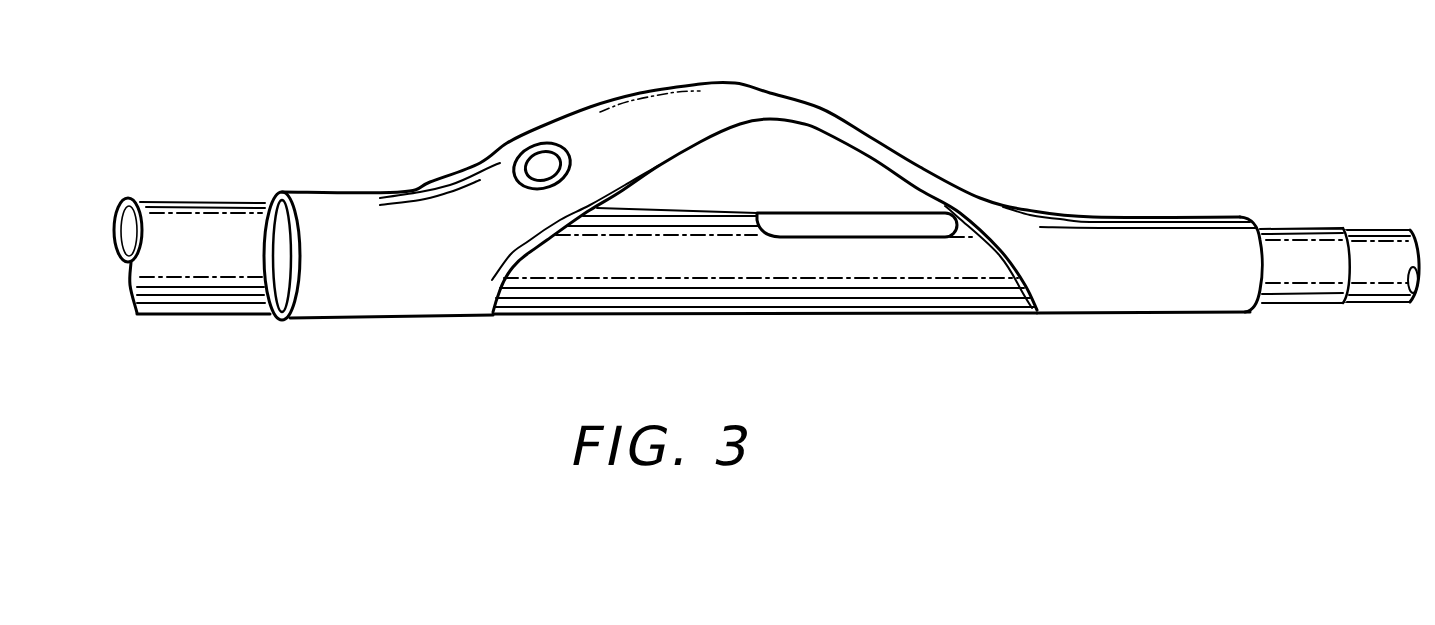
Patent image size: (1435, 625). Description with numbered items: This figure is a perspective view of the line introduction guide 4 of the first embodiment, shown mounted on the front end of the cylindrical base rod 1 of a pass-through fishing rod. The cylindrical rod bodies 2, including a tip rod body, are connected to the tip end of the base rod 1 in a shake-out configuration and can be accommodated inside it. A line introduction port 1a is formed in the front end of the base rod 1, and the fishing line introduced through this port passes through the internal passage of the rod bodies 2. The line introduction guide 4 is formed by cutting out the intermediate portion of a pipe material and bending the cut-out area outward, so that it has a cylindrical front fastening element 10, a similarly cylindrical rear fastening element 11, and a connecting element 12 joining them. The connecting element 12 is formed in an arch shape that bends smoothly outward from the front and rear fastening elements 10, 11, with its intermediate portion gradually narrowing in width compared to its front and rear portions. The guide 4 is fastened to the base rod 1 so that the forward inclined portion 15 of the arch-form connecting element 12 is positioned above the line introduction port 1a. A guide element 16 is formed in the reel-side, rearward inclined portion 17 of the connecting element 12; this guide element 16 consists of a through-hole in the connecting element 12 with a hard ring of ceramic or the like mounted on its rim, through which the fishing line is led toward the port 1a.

The base rod 1 is at (250, 298).
The line introduction port 1a is at (867, 222).
The rod bodies 2 is at (1383, 236).
The line introduction guide 4 is at (720, 100).
The front fastening element 10 is at (1110, 303).
The rear fastening element 11 is at (345, 298).
The connecting element 12 is at (814, 104).
The forward inclined portion 15 is at (575, 150).
The guide element 16 is at (550, 157).
The rearward inclined portion 17 is at (515, 156).